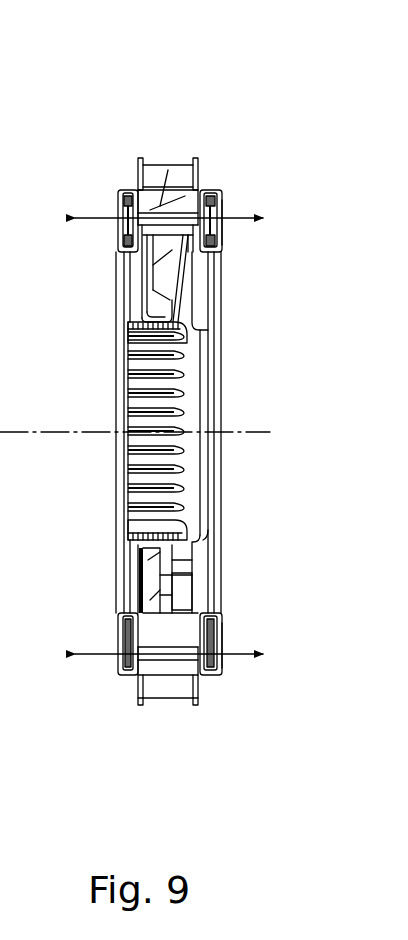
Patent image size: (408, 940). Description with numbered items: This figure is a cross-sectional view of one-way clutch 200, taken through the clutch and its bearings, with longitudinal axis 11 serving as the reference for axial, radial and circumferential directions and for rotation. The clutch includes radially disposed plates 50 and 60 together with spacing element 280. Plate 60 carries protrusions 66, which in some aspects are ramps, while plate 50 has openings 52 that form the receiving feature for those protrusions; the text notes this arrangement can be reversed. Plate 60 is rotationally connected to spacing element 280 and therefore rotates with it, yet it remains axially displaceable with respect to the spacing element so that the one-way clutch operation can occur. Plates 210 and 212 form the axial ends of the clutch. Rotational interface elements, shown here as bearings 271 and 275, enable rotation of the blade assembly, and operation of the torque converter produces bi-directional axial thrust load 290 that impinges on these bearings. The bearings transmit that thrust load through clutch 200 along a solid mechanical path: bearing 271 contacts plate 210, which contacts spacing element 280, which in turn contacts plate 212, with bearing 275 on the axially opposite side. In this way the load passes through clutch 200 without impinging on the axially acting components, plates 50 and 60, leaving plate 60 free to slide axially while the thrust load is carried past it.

The one-way clutch 200 is at (98, 122).
The spacing element 280 is at (165, 205).
The bearing 275 is at (218, 200).
The bearing 271 is at (132, 213).
The bi-directional axial thrust load 290 is at (232, 223).
The longitudinal axis 11 is at (13, 432).
The plate 210 is at (142, 286).
The plate 212 is at (195, 290).
The plate 50 is at (195, 553).
The plate 60 is at (155, 573).
The openings 52 is at (180, 595).
The protrusions 66 is at (163, 590).